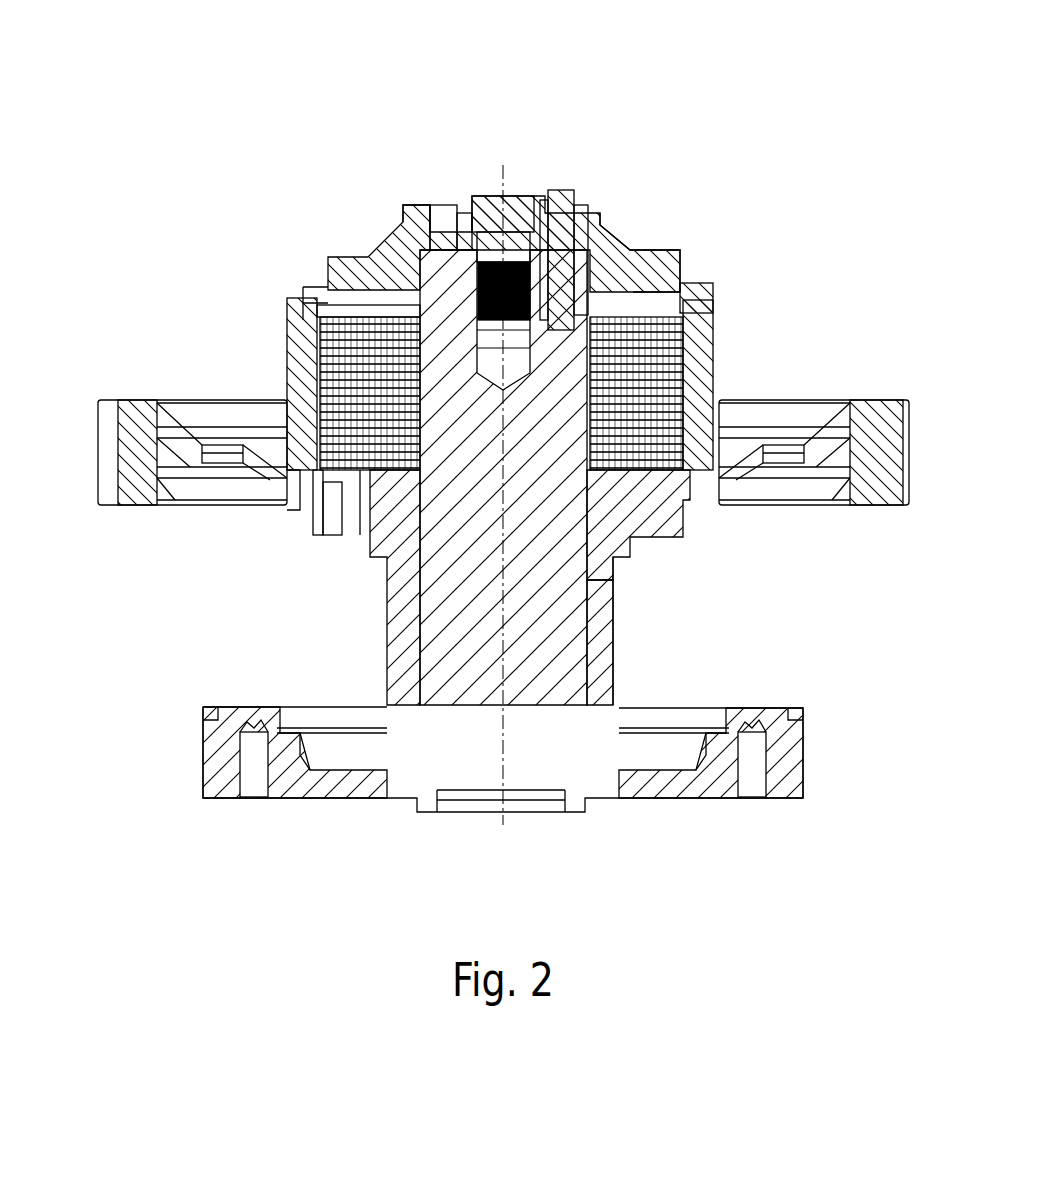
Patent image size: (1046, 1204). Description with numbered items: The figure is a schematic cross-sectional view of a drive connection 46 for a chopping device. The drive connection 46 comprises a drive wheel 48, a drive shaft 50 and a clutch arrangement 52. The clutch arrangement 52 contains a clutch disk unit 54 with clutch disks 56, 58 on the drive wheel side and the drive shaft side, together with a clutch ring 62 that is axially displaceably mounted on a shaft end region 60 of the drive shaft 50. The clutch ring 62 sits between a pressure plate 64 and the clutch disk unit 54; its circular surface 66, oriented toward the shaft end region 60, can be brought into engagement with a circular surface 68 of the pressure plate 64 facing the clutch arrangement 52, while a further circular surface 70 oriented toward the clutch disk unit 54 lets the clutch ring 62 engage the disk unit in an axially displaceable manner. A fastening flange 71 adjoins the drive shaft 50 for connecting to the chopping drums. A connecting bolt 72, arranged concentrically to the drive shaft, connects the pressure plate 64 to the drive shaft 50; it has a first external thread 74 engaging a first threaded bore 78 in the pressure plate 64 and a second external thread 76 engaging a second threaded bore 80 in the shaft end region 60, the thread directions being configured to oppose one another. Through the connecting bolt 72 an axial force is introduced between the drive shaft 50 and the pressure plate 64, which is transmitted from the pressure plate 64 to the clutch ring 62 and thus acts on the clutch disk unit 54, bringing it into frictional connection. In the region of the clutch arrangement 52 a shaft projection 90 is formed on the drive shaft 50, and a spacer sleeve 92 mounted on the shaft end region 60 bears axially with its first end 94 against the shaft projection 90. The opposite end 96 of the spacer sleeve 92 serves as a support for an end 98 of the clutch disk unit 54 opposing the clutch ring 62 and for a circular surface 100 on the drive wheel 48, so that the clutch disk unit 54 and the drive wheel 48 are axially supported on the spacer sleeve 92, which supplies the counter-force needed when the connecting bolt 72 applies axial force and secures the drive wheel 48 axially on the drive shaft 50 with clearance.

The drive connection 46 is at (217, 250).
The drive wheel 48 is at (862, 425).
The drive shaft 50 is at (548, 609).
The clutch arrangement 52 is at (318, 260).
The clutch disk unit 54 is at (347, 468).
The clutch disk 56 is at (306, 369).
The clutch disk 58 is at (678, 351).
The shaft end region 60 is at (455, 222).
The clutch ring 62 is at (630, 307).
The pressure plate 64 is at (427, 222).
The circular surface 66 is at (630, 287).
The circular surface 68 is at (545, 303).
The circular surface 70 is at (668, 323).
The fastening flange 71 is at (690, 800).
The connecting bolt 72 is at (517, 184).
The first external thread 74 is at (487, 212).
The second external thread 76 is at (545, 303).
The first threaded bore 78 is at (474, 224).
The second threaded bore 80 is at (416, 314).
The shaft projection 90 is at (603, 688).
The spacer sleeve 92 is at (665, 519).
The first end 94 is at (398, 686).
The end 96 is at (377, 458).
The end 98 is at (630, 470).
The circular surface 100 is at (300, 478).